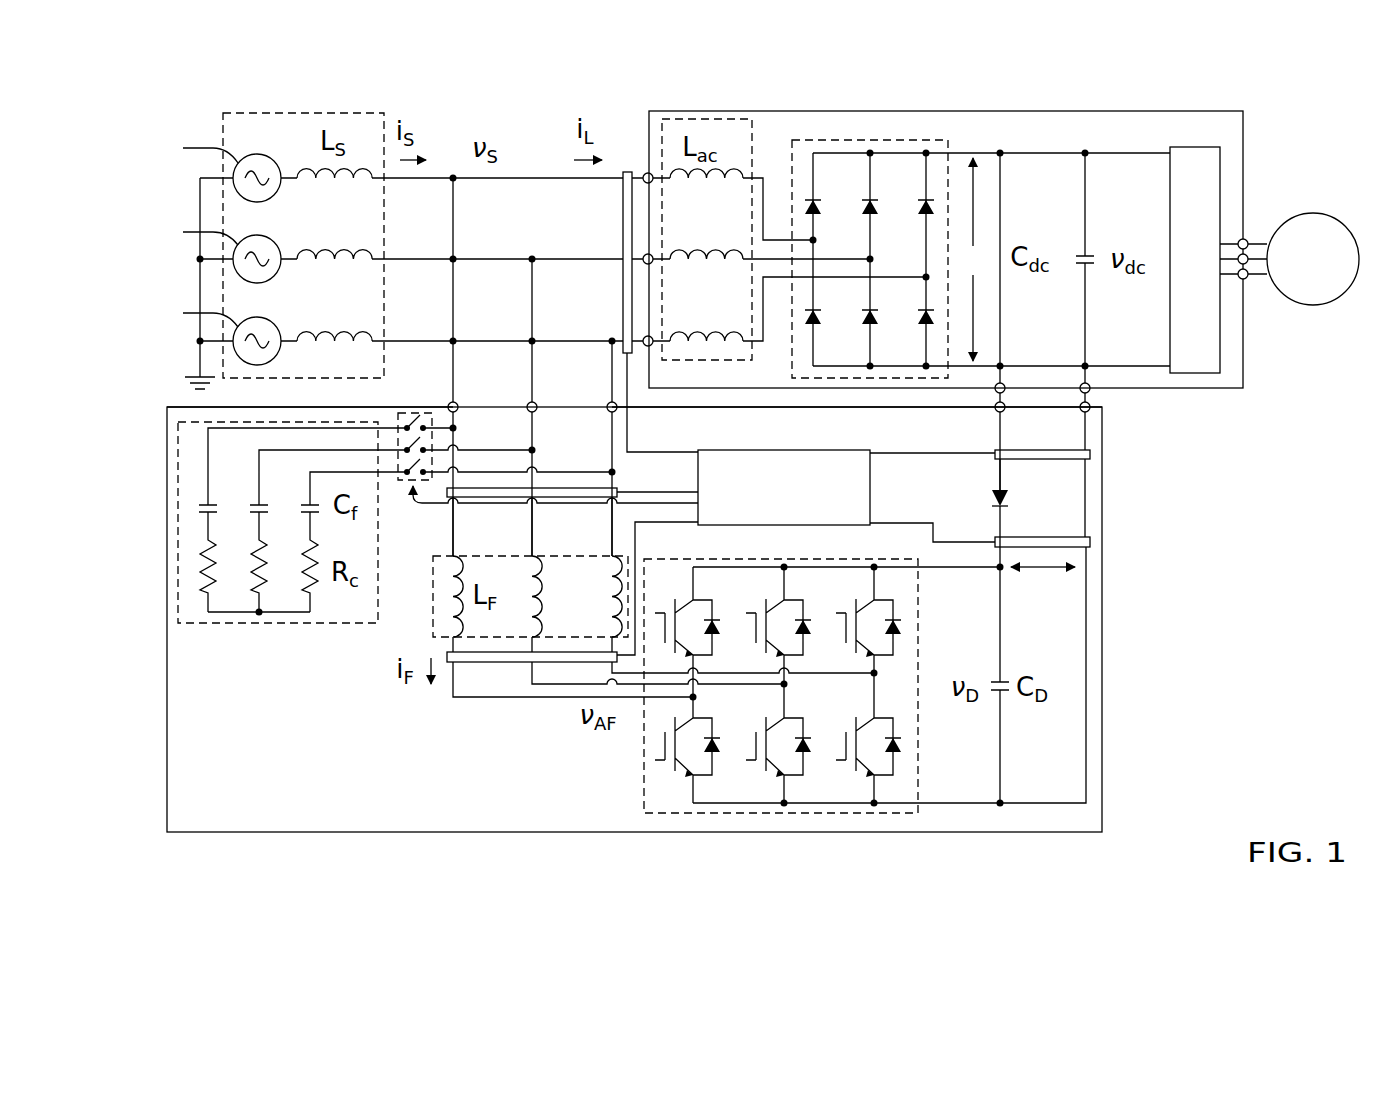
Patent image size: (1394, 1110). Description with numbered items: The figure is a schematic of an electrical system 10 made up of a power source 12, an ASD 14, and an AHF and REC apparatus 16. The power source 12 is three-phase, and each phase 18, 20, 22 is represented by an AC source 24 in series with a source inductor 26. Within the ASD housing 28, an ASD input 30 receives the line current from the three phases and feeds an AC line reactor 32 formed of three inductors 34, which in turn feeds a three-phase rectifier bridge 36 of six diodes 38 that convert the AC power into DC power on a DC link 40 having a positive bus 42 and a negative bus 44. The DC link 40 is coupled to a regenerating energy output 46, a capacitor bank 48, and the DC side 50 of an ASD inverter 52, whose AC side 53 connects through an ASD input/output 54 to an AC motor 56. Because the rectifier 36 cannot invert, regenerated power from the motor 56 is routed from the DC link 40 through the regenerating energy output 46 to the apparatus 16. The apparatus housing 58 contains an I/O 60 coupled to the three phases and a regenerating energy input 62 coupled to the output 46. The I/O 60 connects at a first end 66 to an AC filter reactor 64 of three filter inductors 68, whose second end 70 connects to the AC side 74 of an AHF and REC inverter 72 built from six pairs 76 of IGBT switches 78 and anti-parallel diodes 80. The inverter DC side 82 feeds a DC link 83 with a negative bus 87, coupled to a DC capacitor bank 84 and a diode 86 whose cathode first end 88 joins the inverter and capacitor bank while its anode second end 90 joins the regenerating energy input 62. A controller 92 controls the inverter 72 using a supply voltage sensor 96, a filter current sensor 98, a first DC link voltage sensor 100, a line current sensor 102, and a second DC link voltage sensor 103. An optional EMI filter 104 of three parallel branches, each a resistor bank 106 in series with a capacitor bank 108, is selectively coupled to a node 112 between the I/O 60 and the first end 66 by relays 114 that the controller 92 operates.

The electrical system 10 is at (1272, 496).
The power source 12 is at (302, 111).
The ASD 14 is at (936, 104).
The AHF and REC apparatus 16 is at (1111, 668).
The phase 18 is at (286, 148).
The phase 20 is at (293, 240).
The phase 22 is at (293, 322).
The AC source 24 is at (193, 230).
The source inductor 26 is at (358, 164).
The housing 28 is at (1050, 111).
The ASD input 30 is at (637, 170).
The AC line reactor 32 is at (705, 118).
The inductor 34 is at (752, 172).
The three-phase rectifier bridge 36 is at (825, 140).
The diode 38 is at (862, 206).
The DC link 40 is at (972, 259).
The positive bus 42 is at (1127, 153).
The negative bus 44 is at (1128, 375).
The regenerating energy output 46 is at (1044, 384).
The capacitor bank 48 is at (1093, 257).
The DC side 50 is at (1162, 285).
The ASD inverter 52 is at (1195, 147).
The AC side 53 is at (1230, 318).
The ASD input/output 54 is at (1254, 241).
The AC motor 56 is at (1350, 228).
The housing 58 is at (1106, 620).
The I/O 60 is at (498, 401).
The regenerating energy input 62 is at (1036, 414).
The AC filter reactor 64 is at (433, 598).
The first end 66 is at (440, 551).
The filter inductor 68 is at (464, 564).
The second end 70 is at (486, 642).
The AHF and REC inverter 72 is at (905, 815).
The AC side 74 is at (638, 762).
The pair 76 is at (705, 586).
The IGBT switch 78 is at (656, 613).
The anti-parallel diode 80 is at (718, 628).
The DC side 82 is at (936, 655).
The DC link 83 is at (1045, 572).
The DC capacitor bank 84 is at (1006, 694).
The diode 86 is at (993, 497).
The negative bus 87 is at (978, 805).
The first end 88 is at (994, 508).
The second end 90 is at (1003, 490).
The controller 92 is at (873, 493).
The supply voltage sensor 96 is at (618, 489).
The filter current sensor 98 is at (498, 665).
The first DC link voltage sensor 100 is at (1092, 456).
The line current sensor 102 is at (621, 232).
The second DC link voltage sensor 103 is at (1092, 546).
The EMI filter 104 is at (178, 522).
The resistor bank 106 is at (215, 600).
The capacitor bank 108 is at (205, 500).
The node 112 is at (458, 429).
The relays 114 is at (415, 412).